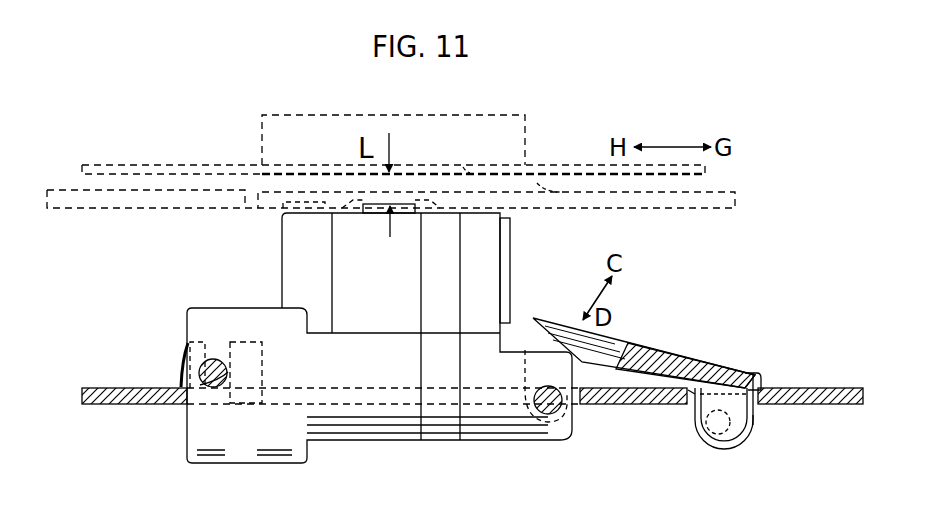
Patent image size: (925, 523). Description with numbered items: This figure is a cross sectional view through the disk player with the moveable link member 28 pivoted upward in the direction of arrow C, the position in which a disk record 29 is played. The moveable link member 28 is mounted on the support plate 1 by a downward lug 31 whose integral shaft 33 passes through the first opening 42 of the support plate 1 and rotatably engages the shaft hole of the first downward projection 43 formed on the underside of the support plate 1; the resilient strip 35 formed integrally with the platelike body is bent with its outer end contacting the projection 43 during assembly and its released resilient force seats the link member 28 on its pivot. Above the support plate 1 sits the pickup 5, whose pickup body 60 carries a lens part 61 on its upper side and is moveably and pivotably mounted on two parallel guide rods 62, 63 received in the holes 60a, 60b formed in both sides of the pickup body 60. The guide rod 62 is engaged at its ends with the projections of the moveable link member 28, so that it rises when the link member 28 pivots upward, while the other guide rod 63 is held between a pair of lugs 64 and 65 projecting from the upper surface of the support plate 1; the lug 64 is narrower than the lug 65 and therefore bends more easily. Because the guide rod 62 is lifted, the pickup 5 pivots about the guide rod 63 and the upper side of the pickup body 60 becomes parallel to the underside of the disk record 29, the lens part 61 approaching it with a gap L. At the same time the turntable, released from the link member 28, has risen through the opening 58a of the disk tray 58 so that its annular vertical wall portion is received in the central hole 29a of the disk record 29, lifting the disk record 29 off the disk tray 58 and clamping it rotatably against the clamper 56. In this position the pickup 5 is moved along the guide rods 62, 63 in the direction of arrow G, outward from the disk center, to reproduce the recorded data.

The support plate 1 is at (813, 388).
The pickup 5 is at (513, 262).
The moveable link member 28 is at (683, 350).
The disk record 29 is at (578, 165).
The central hole 29a is at (463, 165).
The downward lug 31 is at (730, 448).
The shaft 33 is at (712, 438).
The resilient strip 35 is at (763, 383).
The first opening 42 is at (690, 394).
The first downward projection 43 is at (757, 428).
The clamper 56 is at (393, 115).
The disk tray 58 is at (720, 188).
The opening 58a is at (537, 183).
The pickup body 60 is at (482, 210).
The hole 60a is at (545, 410).
The hole 60b is at (217, 386).
The lens part 61 is at (363, 211).
The guide rod 62 is at (560, 441).
The guide rod 63 is at (212, 386).
The lug 64 is at (186, 362).
The lug 65 is at (250, 342).